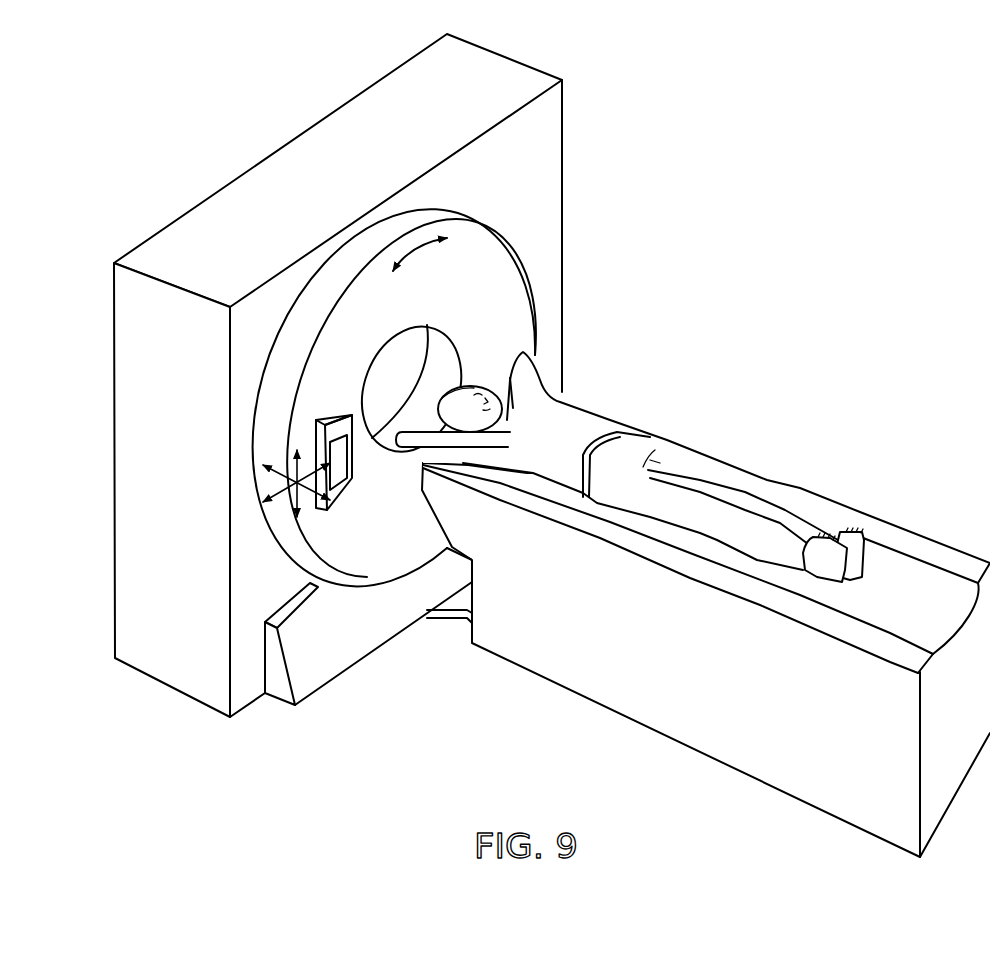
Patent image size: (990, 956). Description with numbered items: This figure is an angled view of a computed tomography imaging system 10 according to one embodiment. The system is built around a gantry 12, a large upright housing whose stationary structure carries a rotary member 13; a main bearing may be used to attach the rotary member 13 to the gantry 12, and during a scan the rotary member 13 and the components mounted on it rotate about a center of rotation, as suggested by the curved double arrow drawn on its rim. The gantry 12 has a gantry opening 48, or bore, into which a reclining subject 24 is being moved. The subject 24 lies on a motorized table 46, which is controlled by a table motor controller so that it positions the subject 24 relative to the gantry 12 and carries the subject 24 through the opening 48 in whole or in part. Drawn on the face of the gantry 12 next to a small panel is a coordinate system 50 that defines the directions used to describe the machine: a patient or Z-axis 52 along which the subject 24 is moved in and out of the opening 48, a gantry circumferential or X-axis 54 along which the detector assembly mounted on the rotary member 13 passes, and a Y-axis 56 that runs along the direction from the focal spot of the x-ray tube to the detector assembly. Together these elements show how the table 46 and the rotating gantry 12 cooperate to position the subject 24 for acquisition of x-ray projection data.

The computed tomography (CT) imaging system 10 is at (750, 176).
The gantry 12 is at (502, 72).
The rotary member 13 is at (491, 285).
The subject 24 is at (565, 413).
The motorized table 46 is at (658, 718).
The gantry opening 48 is at (398, 363).
The coordinate system 50 is at (267, 482).
The Z-axis 52 is at (257, 452).
The X-axis 54 is at (297, 420).
The Y-axis 56 is at (235, 509).